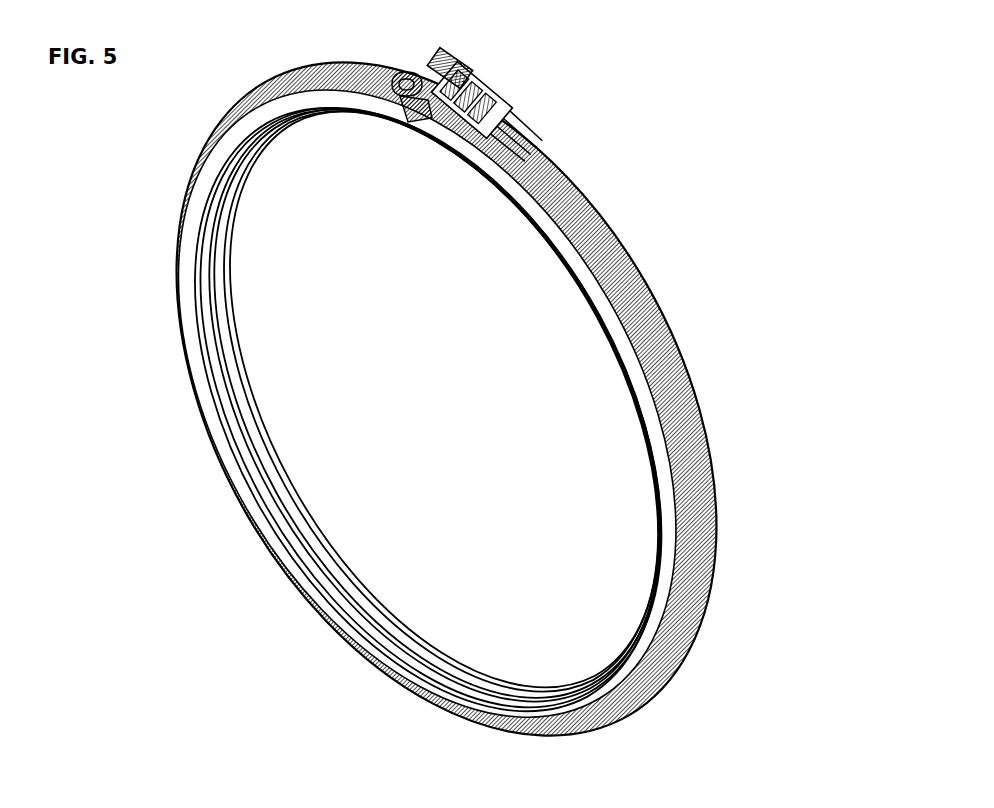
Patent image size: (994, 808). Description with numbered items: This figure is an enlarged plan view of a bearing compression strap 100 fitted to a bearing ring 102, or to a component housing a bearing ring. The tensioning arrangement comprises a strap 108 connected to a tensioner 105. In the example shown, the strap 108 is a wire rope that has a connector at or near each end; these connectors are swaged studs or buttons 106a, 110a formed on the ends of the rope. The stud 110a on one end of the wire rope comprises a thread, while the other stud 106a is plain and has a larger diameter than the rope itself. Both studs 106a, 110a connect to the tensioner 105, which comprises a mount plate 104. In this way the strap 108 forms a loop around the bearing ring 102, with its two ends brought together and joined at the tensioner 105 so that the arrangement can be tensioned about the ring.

The strap 100 is at (455, 392).
The bearing ring 102 is at (427, 398).
The mount plate 104 is at (405, 116).
The tensioner 105 is at (488, 69).
The stud 106a is at (397, 96).
The strap 108 is at (643, 276).
The stud 110a is at (503, 96).